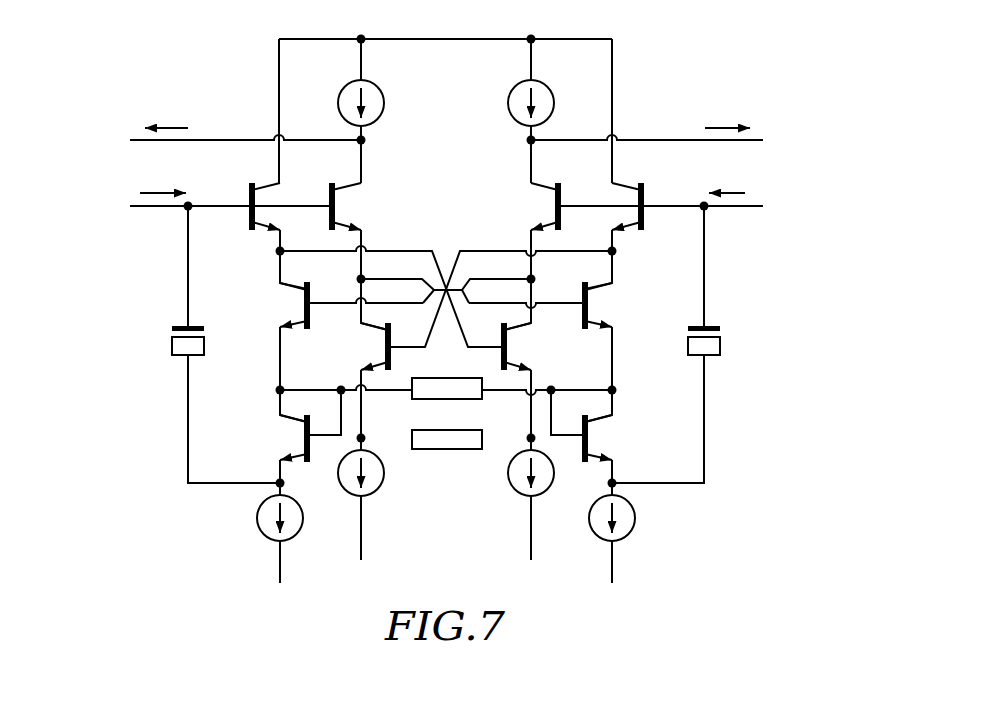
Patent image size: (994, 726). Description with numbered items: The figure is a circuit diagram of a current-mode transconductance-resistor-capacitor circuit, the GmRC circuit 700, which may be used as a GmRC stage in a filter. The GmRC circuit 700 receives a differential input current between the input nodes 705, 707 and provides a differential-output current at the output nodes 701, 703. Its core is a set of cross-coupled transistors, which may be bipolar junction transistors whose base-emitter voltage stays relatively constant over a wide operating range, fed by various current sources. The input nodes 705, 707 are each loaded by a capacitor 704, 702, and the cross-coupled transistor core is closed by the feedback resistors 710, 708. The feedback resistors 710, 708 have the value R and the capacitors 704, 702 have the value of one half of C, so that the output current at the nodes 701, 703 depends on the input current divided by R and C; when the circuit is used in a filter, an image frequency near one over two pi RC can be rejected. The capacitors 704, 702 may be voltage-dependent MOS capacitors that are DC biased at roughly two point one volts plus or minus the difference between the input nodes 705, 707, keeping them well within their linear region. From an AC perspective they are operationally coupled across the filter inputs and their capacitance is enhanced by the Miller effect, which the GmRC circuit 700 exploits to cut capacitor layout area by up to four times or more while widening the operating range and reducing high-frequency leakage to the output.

The GmRC circuit 700 is at (460, 301).
The output node 701 is at (133, 140).
The output node 703 is at (760, 139).
The input node 705 is at (133, 207).
The input node 707 is at (760, 205).
The capacitor 704 is at (204, 345).
The capacitor 702 is at (688, 345).
The feedback resistor 710 is at (455, 399).
The feedback resistor 708 is at (455, 449).